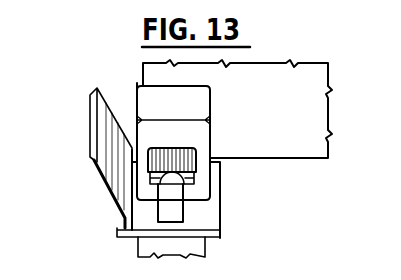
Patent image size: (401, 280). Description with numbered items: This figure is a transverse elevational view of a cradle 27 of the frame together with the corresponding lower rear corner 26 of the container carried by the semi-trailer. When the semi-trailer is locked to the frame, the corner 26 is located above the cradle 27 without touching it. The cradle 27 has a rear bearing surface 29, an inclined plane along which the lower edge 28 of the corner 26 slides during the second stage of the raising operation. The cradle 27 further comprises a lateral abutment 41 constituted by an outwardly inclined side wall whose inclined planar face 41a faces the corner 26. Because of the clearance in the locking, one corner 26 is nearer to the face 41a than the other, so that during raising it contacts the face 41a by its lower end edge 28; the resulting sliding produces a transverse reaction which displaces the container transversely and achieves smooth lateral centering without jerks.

The lower rear corner 26 is at (194, 138).
The cradle 27 is at (136, 238).
The lower edge 28 is at (197, 204).
The rear bearing surface 29 is at (217, 200).
The lateral abutment 41 is at (112, 104).
The inclined planar face 41a is at (107, 142).